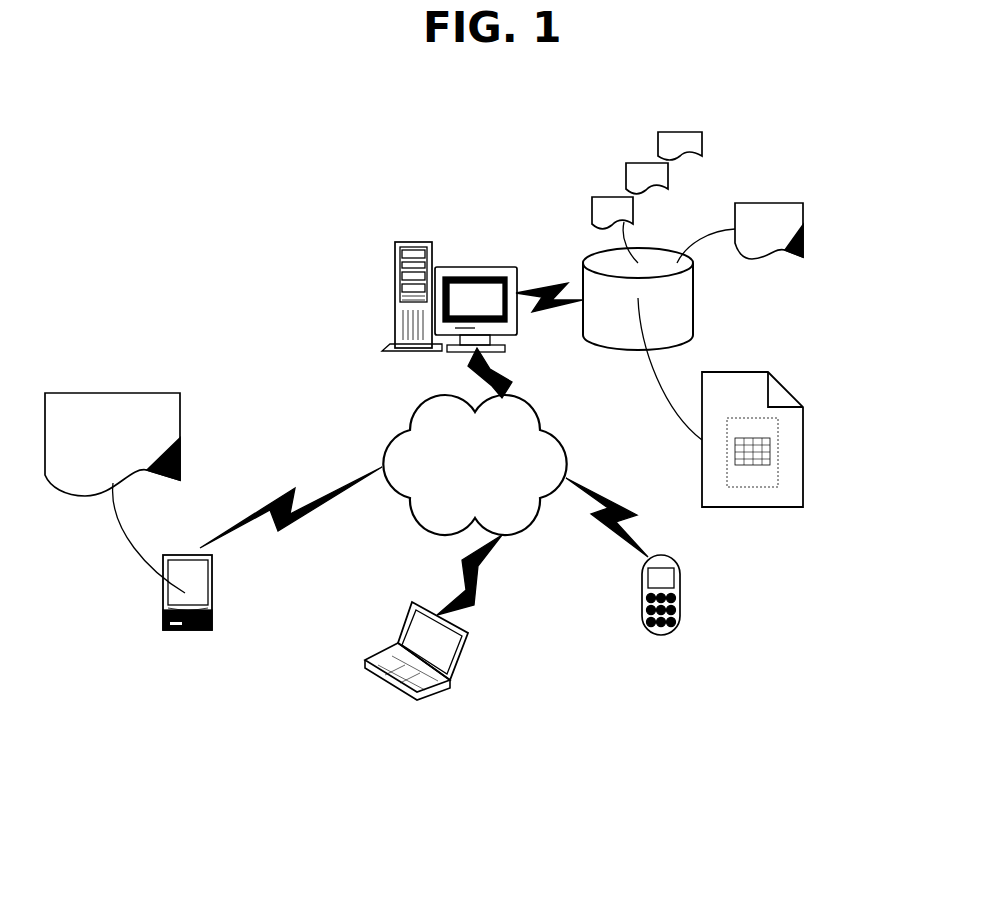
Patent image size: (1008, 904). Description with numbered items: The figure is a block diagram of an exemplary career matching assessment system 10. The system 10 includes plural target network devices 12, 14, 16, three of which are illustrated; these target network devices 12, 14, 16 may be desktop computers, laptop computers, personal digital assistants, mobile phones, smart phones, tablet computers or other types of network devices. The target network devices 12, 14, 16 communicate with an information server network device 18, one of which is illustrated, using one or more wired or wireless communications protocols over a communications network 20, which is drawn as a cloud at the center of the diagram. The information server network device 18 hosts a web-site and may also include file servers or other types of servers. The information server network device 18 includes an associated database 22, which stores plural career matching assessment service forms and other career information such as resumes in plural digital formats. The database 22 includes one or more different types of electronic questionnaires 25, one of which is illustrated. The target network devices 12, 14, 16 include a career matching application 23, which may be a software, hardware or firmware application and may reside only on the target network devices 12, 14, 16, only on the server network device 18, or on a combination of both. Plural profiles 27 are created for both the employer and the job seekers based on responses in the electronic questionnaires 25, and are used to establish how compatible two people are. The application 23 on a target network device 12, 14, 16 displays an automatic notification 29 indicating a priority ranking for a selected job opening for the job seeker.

The career matching assessment system 10 is at (778, 88).
The target network device 12 is at (212, 590).
The target network device 14 is at (420, 696).
The target network device 16 is at (673, 598).
The information server network device 18 is at (477, 267).
The communications network 20 is at (548, 430).
The associated database 22 is at (693, 297).
The career matching application 23 is at (395, 300).
The electronic questionnaire 25 is at (752, 507).
The profile 27 is at (633, 178).
The automatic notification 29 is at (770, 203).